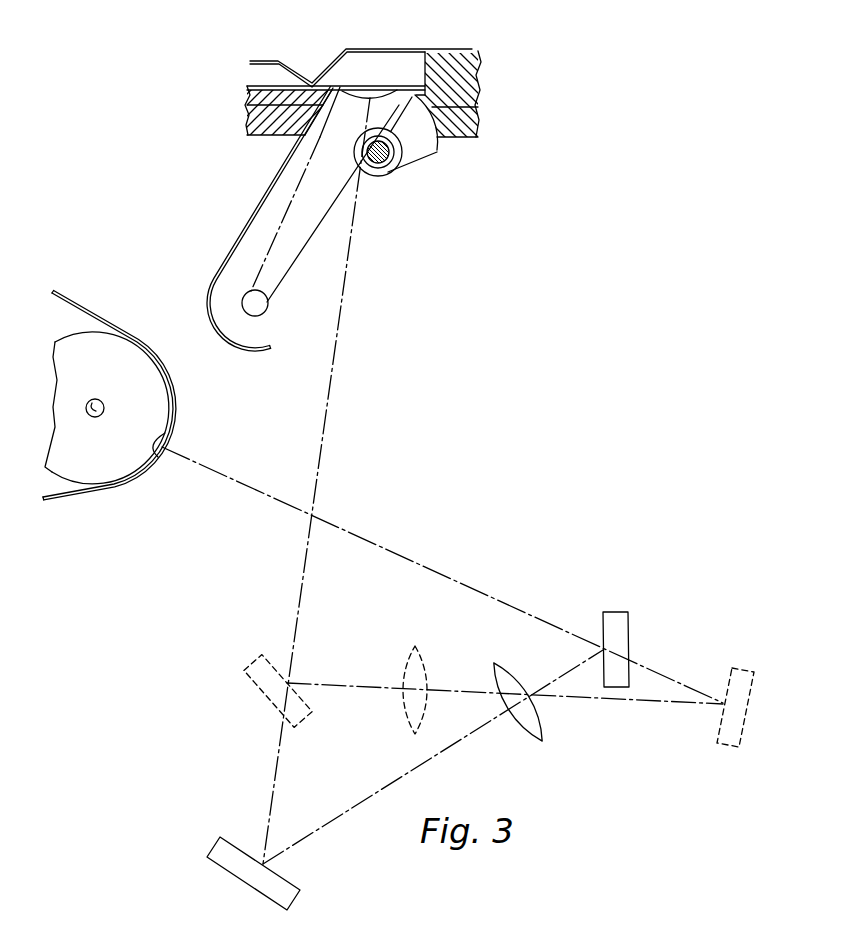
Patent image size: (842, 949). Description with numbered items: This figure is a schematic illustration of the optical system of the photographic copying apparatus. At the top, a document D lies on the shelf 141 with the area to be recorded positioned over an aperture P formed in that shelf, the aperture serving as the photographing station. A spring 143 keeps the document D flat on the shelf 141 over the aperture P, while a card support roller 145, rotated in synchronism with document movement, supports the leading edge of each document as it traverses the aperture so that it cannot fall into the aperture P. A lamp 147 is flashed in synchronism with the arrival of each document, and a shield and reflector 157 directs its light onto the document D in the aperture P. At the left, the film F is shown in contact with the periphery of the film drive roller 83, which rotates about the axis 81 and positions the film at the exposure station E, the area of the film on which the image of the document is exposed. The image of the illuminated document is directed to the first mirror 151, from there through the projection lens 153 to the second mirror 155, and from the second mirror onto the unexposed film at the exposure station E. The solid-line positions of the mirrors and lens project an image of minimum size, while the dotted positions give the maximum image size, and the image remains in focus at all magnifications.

The spring 143 is at (254, 60).
The shelf 141 is at (262, 97).
The document D is at (368, 88).
The aperture P is at (369, 100).
The card support roller 145 is at (428, 148).
The shield and reflector 157 is at (257, 214).
The lamp 147 is at (243, 298).
The drive roller 83 is at (146, 369).
The axis 81 is at (101, 404).
The exposure station E is at (152, 444).
The film F is at (72, 494).
The first mirror 151 is at (253, 664).
The projection lens 153 is at (421, 656).
The second mirror 155 is at (620, 617).